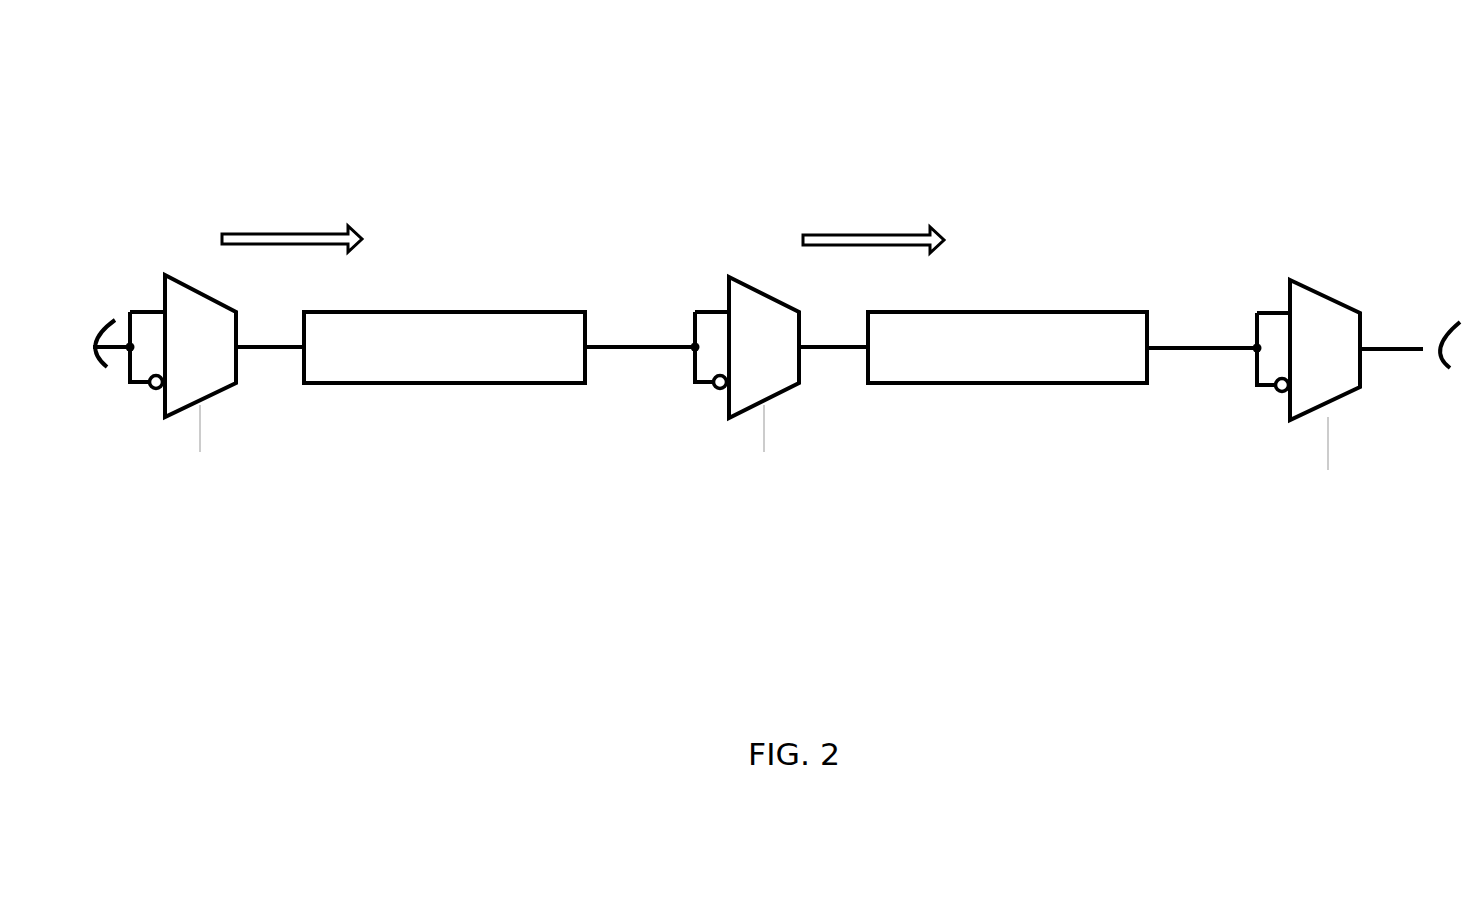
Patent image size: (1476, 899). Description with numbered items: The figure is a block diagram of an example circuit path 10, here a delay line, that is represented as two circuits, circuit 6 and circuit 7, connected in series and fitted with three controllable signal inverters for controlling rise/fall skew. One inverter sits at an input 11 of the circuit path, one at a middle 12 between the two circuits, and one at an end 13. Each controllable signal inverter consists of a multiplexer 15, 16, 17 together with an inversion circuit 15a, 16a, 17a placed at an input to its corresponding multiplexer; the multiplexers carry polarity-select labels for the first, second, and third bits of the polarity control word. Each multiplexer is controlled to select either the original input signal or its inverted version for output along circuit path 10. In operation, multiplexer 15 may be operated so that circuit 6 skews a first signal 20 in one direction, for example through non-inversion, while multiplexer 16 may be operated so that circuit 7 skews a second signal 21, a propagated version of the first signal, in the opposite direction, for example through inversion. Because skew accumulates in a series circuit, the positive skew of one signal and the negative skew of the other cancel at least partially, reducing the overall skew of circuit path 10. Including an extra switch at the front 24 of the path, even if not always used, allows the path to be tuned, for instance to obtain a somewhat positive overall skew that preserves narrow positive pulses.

The circuit path 10 is at (655, 74).
The front of circuit path 24 is at (190, 184).
The multiplexer 15 is at (190, 283).
The inversion circuit 15a is at (151, 388).
The input of the circuit path 11 is at (293, 345).
The first signal 20 is at (313, 233).
The circuit 6 is at (460, 310).
The middle of the circuit path 12 is at (651, 345).
The multiplexer 16 is at (751, 285).
The inversion circuit 16a is at (714, 389).
The second signal 21 is at (897, 233).
The circuit 7 is at (1045, 311).
The end of the circuit path 13 is at (1222, 346).
The multiplexer 17 is at (1320, 290).
The inversion circuit 17a is at (1276, 391).